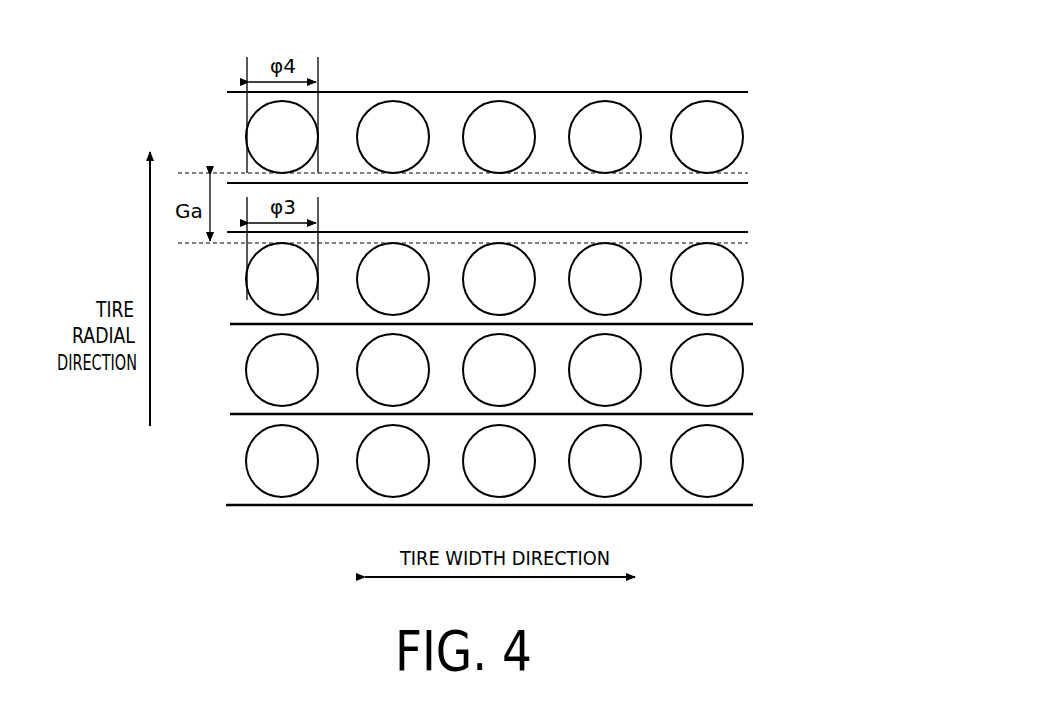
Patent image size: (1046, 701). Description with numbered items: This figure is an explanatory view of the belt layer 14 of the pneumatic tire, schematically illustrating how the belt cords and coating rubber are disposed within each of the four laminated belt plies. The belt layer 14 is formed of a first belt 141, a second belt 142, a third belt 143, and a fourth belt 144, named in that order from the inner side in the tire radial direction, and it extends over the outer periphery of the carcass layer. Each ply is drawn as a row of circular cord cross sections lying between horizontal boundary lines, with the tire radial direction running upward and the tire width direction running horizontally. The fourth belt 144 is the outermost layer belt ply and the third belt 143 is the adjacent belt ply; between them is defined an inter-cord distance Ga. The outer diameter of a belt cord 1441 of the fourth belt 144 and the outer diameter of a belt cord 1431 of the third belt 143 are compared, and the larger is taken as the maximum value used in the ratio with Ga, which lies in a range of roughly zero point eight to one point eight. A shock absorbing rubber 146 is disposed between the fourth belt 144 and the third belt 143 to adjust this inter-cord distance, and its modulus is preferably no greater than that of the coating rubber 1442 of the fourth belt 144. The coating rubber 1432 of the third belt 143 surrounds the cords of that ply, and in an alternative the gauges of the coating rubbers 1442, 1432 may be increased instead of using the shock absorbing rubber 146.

The belt layer 14 is at (765, 52).
The first belt 141 is at (765, 457).
The second belt 142 is at (765, 372).
The third belt 143 is at (508, 261).
The fourth belt 144 is at (508, 117).
The shock absorbing rubber 146 is at (765, 210).
The belt cord 1431 is at (603, 257).
The coating rubber 1432 is at (655, 250).
The belt cord 1441 is at (603, 117).
The coating rubber 1442 is at (657, 105).